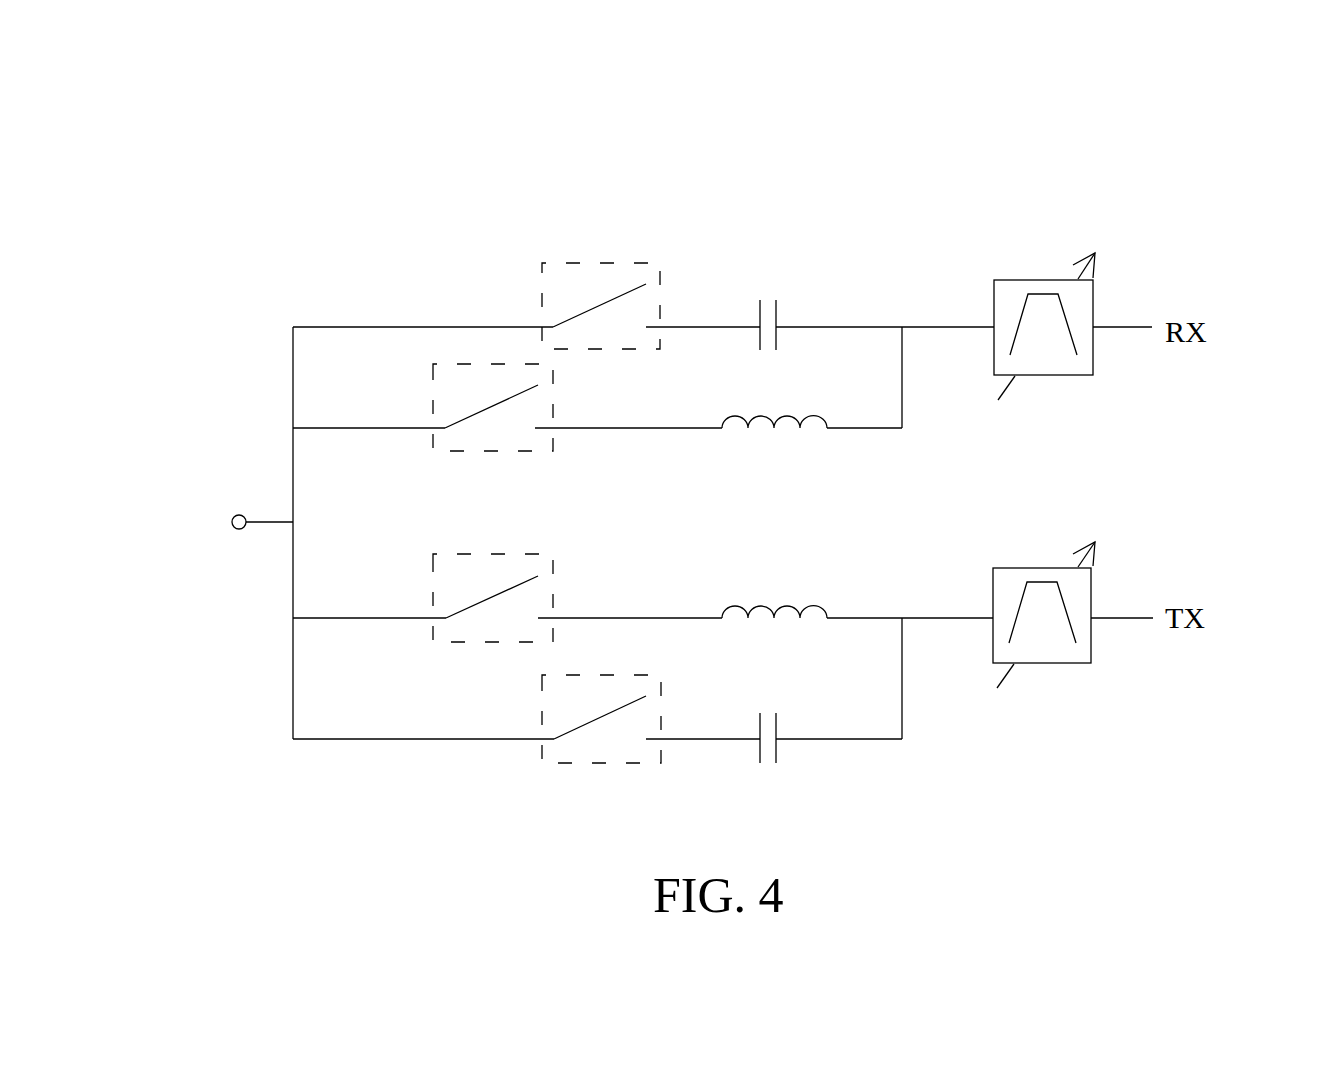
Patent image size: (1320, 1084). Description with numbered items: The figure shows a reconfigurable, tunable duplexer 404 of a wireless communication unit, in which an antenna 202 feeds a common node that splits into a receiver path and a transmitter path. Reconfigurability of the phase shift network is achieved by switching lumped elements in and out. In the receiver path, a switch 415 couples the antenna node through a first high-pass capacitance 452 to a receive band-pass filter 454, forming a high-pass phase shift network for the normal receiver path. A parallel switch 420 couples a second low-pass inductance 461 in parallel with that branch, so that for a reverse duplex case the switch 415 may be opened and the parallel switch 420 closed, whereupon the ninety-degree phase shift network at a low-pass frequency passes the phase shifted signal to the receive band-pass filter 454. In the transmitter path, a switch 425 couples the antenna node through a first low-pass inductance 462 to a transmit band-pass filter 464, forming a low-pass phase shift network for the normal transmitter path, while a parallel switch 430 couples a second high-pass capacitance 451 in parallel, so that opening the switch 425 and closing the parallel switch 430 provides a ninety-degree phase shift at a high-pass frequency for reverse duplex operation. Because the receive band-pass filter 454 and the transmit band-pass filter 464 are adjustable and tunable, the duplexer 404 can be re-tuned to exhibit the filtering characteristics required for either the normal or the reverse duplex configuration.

The antenna 202 is at (270, 520).
The reconfigurable duplexer 404 is at (1129, 137).
The switch 415 is at (582, 262).
The parallel switch 420 is at (432, 374).
The switch 425 is at (432, 564).
The parallel switch 430 is at (582, 765).
The high-pass capacitance 451 is at (783, 730).
The high-pass capacitance 452 is at (781, 314).
The receive band-pass filter 454 is at (1018, 280).
The low-pass inductance 461 is at (737, 431).
The low-pass inductance 462 is at (737, 621).
The transmit band-pass filter 464 is at (1042, 664).